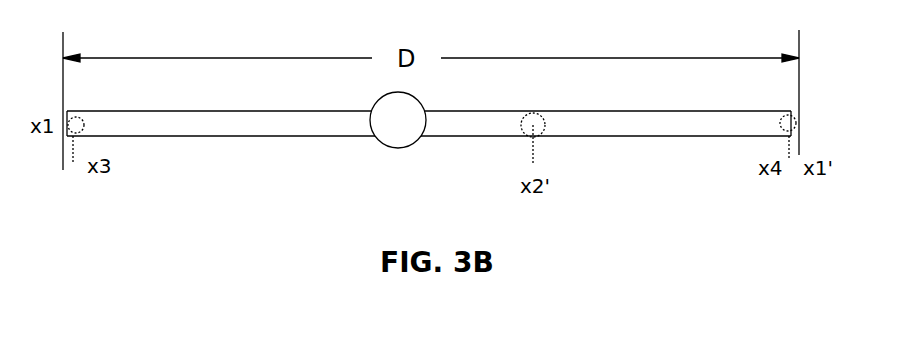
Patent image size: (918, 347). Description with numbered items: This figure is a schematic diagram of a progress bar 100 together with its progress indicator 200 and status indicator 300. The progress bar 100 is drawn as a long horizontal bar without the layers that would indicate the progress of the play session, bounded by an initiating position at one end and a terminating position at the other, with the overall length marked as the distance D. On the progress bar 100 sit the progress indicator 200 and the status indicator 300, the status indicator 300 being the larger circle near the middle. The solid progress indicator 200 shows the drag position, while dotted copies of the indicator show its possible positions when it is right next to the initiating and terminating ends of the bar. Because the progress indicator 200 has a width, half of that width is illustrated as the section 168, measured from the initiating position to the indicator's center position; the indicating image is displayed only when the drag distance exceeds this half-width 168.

The progress bar 100 is at (295, 111).
The progress indicator 200 is at (535, 112).
The status indicator 300 is at (405, 112).
The half-width 168 is at (63, 167).